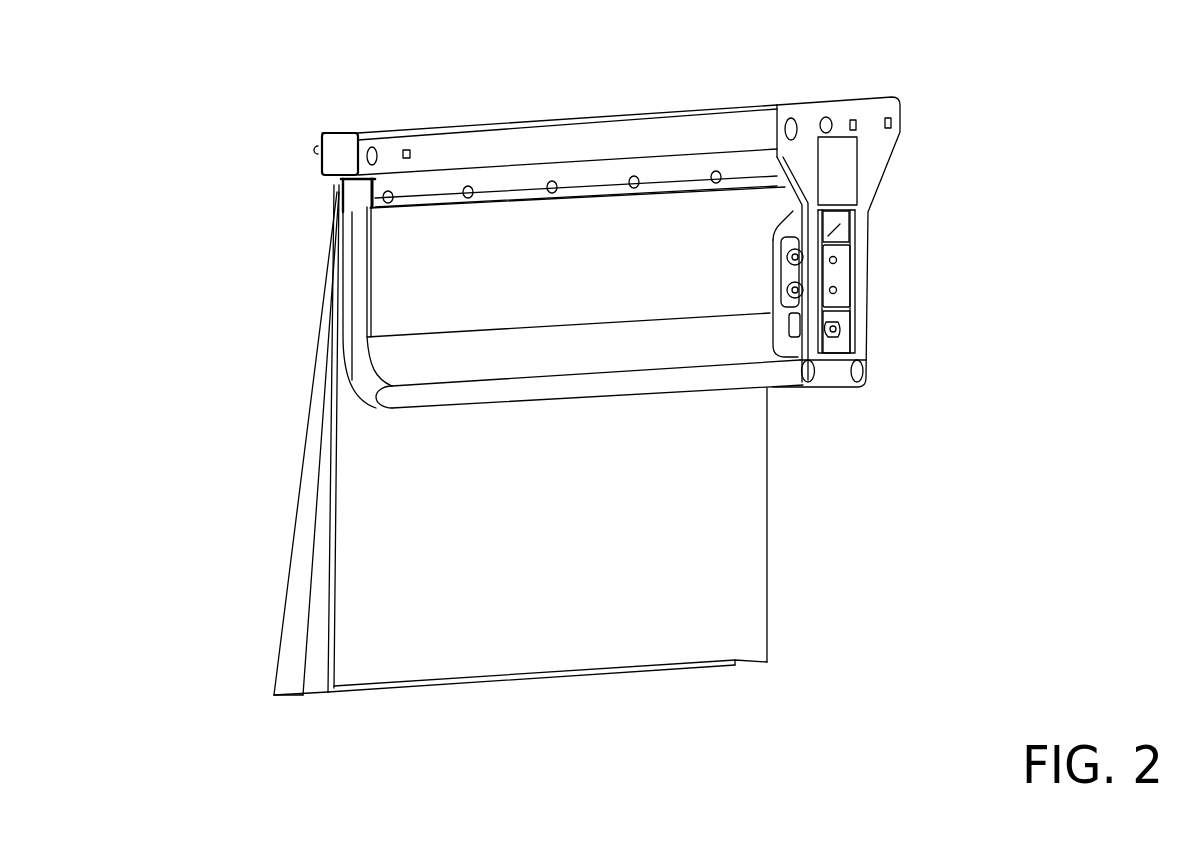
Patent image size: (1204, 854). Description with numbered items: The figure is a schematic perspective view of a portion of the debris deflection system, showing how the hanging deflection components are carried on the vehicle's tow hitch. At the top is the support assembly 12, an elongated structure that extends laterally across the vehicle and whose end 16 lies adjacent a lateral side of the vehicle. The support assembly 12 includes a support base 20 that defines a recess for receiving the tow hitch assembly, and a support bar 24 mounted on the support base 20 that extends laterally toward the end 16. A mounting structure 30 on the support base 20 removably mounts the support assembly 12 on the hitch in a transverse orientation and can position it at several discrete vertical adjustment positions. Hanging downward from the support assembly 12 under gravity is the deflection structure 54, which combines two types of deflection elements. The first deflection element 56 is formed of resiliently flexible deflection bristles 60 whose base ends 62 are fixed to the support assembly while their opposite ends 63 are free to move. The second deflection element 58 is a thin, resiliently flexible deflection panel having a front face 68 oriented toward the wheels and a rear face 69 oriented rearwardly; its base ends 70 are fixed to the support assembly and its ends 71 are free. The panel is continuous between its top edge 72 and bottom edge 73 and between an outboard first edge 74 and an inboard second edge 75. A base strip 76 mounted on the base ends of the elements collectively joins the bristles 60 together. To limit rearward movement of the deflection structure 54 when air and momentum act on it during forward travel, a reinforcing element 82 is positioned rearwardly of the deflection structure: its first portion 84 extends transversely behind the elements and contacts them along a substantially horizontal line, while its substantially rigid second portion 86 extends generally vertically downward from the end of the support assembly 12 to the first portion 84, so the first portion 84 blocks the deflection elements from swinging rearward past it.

The support assembly 12 is at (845, 91).
The end of support assembly 16 is at (337, 132).
The support base 20 is at (903, 113).
The support bar 24 is at (668, 114).
The mounting structure 30 is at (872, 281).
The deflection structure 54 is at (777, 620).
The first deflection element 56 is at (292, 527).
The second deflection element 58 is at (468, 640).
The deflection bristles 60 is at (297, 483).
The base ends of deflection bristles 62 is at (343, 182).
The free ends of deflection bristles 63 is at (315, 694).
The front face 68 is at (745, 568).
The rear face 69 is at (330, 640).
The base ends of deflection panels 70 is at (376, 218).
The free ends of deflection panels 71 is at (542, 678).
The top edge 72 is at (343, 187).
The bottom edge 73 is at (637, 670).
The first edge 74 is at (333, 555).
The second edge 75 is at (766, 510).
The base strip 76 is at (345, 192).
The reinforcing element 82 is at (345, 306).
The first portion of reinforcing element 84 is at (727, 388).
The second portion of reinforcing element 86 is at (344, 362).